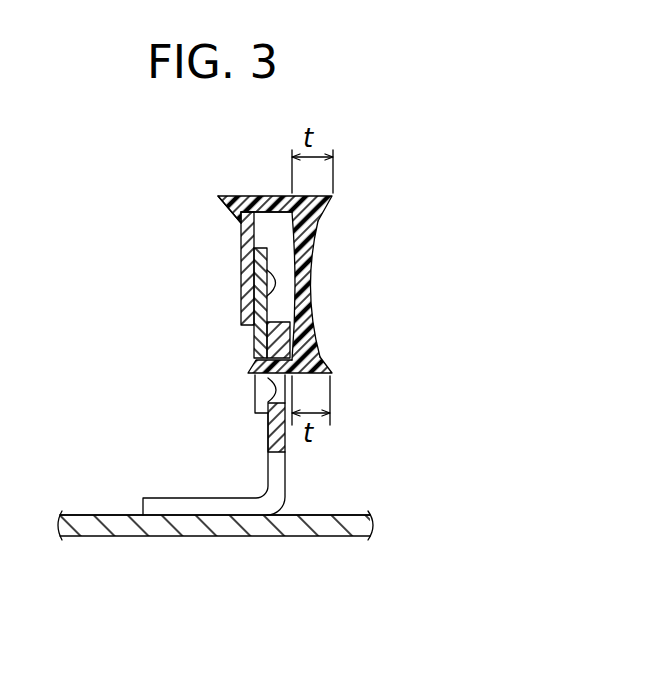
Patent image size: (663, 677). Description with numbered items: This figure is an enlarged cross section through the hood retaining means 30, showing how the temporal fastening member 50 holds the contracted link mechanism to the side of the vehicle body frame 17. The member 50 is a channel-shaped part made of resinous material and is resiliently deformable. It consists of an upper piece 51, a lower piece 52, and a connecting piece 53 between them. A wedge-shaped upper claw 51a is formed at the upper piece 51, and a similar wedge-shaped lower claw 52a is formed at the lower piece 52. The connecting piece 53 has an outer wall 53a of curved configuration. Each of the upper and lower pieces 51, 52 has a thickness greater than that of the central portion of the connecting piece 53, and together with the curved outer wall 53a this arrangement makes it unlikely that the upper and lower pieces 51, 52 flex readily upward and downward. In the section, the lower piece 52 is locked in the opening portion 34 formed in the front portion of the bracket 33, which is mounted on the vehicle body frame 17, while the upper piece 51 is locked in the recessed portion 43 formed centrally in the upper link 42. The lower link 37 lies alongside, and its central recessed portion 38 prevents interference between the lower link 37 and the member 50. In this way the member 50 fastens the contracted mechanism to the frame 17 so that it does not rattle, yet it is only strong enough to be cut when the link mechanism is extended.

The vehicle body frame 17 is at (95, 518).
The hood retaining means 30 is at (488, 356).
The bracket 33 is at (287, 456).
The opening portion 34 is at (322, 358).
The lower link 37 is at (240, 307).
The recessed portion 38 is at (253, 350).
The upper link 42 is at (240, 262).
The recessed portion 43 is at (240, 195).
The temporal fastening member 50 is at (274, 276).
The upper piece 51 is at (222, 160).
The upper claw 51a is at (232, 213).
The lower piece 52 is at (262, 410).
The lower claw 52a is at (252, 372).
The connecting piece 53 is at (378, 286).
The outer wall 53a is at (332, 228).